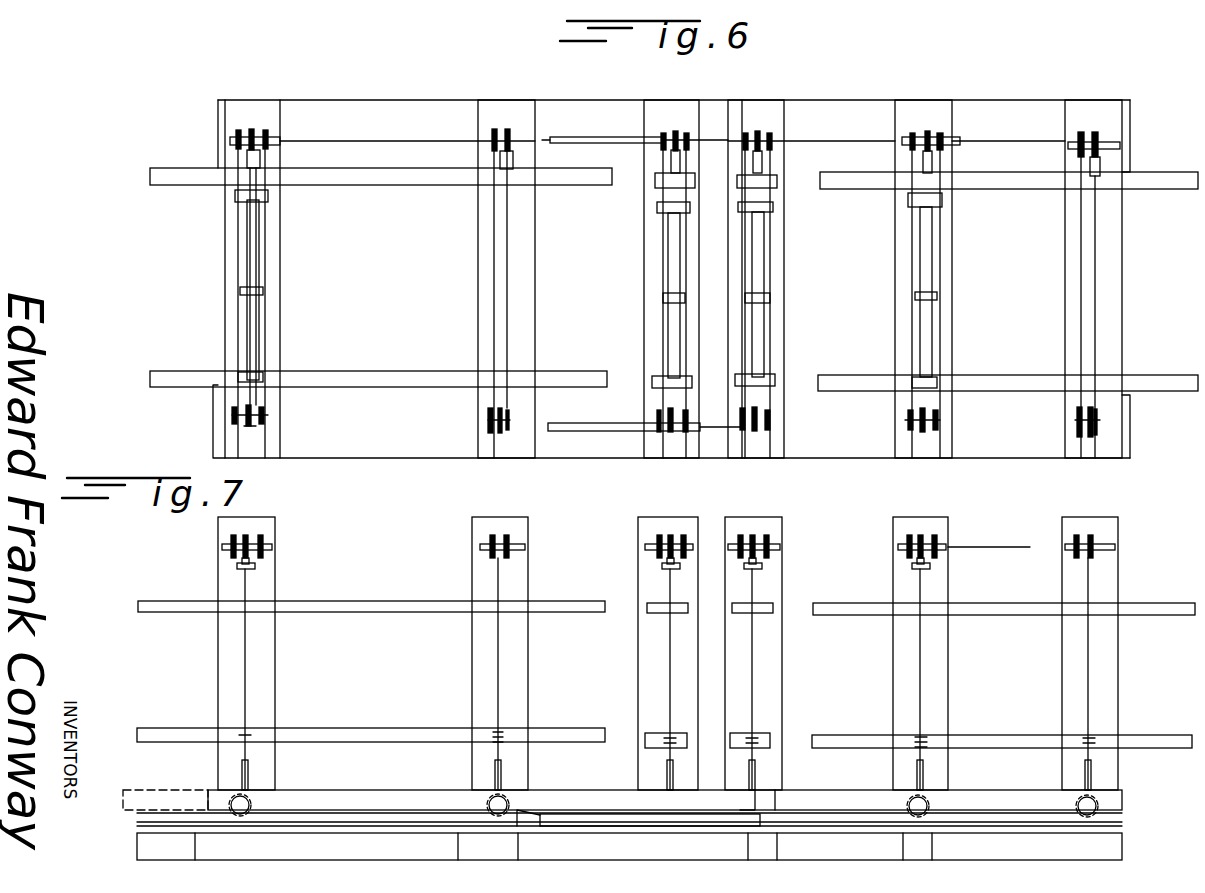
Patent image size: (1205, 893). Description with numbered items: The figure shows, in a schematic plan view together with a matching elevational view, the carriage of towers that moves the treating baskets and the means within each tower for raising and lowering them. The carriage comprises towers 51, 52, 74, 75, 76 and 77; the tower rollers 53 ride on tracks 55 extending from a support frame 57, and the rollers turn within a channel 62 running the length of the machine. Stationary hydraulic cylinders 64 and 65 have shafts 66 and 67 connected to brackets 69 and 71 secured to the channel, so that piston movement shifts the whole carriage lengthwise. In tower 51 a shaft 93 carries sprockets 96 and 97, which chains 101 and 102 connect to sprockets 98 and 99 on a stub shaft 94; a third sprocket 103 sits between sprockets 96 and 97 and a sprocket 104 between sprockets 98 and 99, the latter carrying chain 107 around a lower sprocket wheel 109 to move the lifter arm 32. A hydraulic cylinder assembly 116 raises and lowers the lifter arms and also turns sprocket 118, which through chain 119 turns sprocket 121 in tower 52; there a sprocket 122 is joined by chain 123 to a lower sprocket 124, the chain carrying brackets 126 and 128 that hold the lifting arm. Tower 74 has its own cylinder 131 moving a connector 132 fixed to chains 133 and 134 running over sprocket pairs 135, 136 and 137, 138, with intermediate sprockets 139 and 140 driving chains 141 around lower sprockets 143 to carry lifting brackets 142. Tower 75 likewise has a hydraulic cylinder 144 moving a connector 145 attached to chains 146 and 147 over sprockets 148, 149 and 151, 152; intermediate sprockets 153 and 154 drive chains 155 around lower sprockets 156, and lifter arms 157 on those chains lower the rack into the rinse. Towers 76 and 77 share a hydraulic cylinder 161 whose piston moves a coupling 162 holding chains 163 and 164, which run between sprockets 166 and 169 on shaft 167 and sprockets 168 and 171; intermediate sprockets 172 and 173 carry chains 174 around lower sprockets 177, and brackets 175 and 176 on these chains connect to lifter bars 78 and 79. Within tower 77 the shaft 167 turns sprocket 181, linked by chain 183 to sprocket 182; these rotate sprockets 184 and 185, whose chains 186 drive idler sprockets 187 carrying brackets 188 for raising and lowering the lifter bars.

In FIG. 6, the lifter arm 32 is at (345, 370).
In FIG. 7, the lifter arm 32 is at (368, 728).
In FIG. 6, the tower 51 is at (262, 95).
In FIG. 7, the tower 51 is at (269, 515).
In FIG. 6, the tower 52 is at (506, 95).
In FIG. 7, the tower 52 is at (515, 515).
In FIG. 7, the rollers 53 is at (255, 800).
In FIG. 7, the tracks 55 is at (130, 810).
In FIG. 7, the support frame 57 is at (370, 857).
In FIG. 7, the channel 62 is at (378, 781).
In FIG. 6, the hydraulic cylinder 64 is at (580, 138).
In FIG. 6, the hydraulic cylinder 65 is at (582, 422).
In FIG. 7, the hydraulic cylinder 65 is at (740, 827).
In FIG. 6, the shaft 66 is at (720, 135).
In FIG. 6, the shaft 67 is at (720, 430).
In FIG. 6, the bracket 69 is at (760, 128).
In FIG. 7, the bracket 71 is at (778, 804).
In FIG. 6, the tower 74 is at (669, 91).
In FIG. 7, the tower 74 is at (653, 509).
In FIG. 6, the tower 75 is at (779, 97).
In FIG. 7, the tower 75 is at (767, 515).
In FIG. 6, the tower 76 is at (932, 95).
In FIG. 7, the tower 76 is at (931, 513).
In FIG. 6, the tower 77 is at (1094, 95).
In FIG. 7, the tower 77 is at (1101, 513).
In FIG. 6, the lifter bar 78 is at (1140, 172).
In FIG. 6, the lifter bar 79 is at (1150, 374).
In FIG. 7, the lifter bar 79 is at (1012, 735).
In FIG. 6, the shaft 93 is at (345, 140).
In FIG. 6, the stub shaft 94 is at (250, 428).
In FIG. 6, the sprocket 96 is at (239, 128).
In FIG. 6, the sprocket 97 is at (266, 128).
In FIG. 6, the sprocket 98 is at (231, 416).
In FIG. 7, the sprocket 98 is at (231, 545).
In FIG. 6, the sprocket 99 is at (264, 416).
In FIG. 7, the sprocket 99 is at (263, 543).
In FIG. 6, the chain 101 is at (237, 250).
In FIG. 6, the chain 102 is at (265, 260).
In FIG. 6, the sprocket 103 is at (253, 127).
In FIG. 6, the sprocket 104 is at (246, 420).
In FIG. 7, the sprocket 104 is at (244, 534).
In FIG. 7, the chain 107 is at (245, 648).
In FIG. 7, the lower sprocket wheel 109 is at (241, 773).
In FIG. 6, the hydraulic cylinder assembly 116 is at (255, 315).
In FIG. 6, the sprocket 118 is at (494, 127).
In FIG. 7, the sprocket 118 is at (491, 536).
In FIG. 6, the chain 119 is at (494, 270).
In FIG. 6, the sprocket 121 is at (487, 420).
In FIG. 6, the sprocket 122 is at (509, 127).
In FIG. 7, the sprocket 122 is at (509, 543).
In FIG. 7, the chain 123 is at (500, 588).
In FIG. 7, the lower sprocket 124 is at (503, 775).
In FIG. 6, the bracket 126 is at (500, 405).
In FIG. 7, the bracket 126 is at (500, 735).
In FIG. 6, the bracket 128 is at (500, 163).
In FIG. 6, the cylinder 131 is at (668, 305).
In FIG. 6, the connector 132 is at (668, 222).
In FIG. 6, the chain 133 is at (658, 207).
In FIG. 6, the chain 134 is at (688, 205).
In FIG. 6, the sprocket 135 is at (662, 131).
In FIG. 6, the sprocket 136 is at (657, 416).
In FIG. 7, the sprocket 136 is at (657, 546).
In FIG. 6, the sprocket 137 is at (689, 131).
In FIG. 6, the sprocket 138 is at (685, 433).
In FIG. 7, the sprocket 138 is at (685, 536).
In FIG. 6, the sprocket 139 is at (675, 129).
In FIG. 6, the sprocket 140 is at (668, 428).
In FIG. 7, the chains 141 is at (670, 655).
In FIG. 6, the lifting bracket 142 is at (655, 181).
In FIG. 7, the lifting bracket 142 is at (648, 738).
In FIG. 7, the lower sprocket 143 is at (668, 773).
In FIG. 6, the hydraulic cylinder 144 is at (758, 305).
In FIG. 6, the connector 145 is at (773, 206).
In FIG. 6, the chain 146 is at (746, 250).
In FIG. 6, the chain 147 is at (770, 262).
In FIG. 6, the sprocket 148 is at (746, 131).
In FIG. 7, the sprocket 148 is at (672, 534).
In FIG. 6, the sprocket 149 is at (742, 431).
In FIG. 7, the sprocket 149 is at (740, 540).
In FIG. 6, the sprocket 151 is at (771, 131).
In FIG. 6, the sprocket 152 is at (768, 431).
In FIG. 7, the sprocket 152 is at (769, 545).
In FIG. 6, the intermediate sprocket 153 is at (758, 129).
In FIG. 6, the intermediate sprocket 154 is at (755, 432).
In FIG. 7, the intermediate sprocket 154 is at (755, 540).
In FIG. 7, the chains 155 is at (752, 650).
In FIG. 7, the sprocket 156 is at (756, 775).
In FIG. 6, the lifter arm 157 is at (765, 178).
In FIG. 7, the lifter arm 157 is at (755, 736).
In FIG. 6, the hydraulic cylinder 161 is at (920, 305).
In FIG. 6, the coupling 162 is at (908, 200).
In FIG. 6, the chain 163 is at (912, 238).
In FIG. 6, the chain 164 is at (940, 262).
In FIG. 6, the sprocket 166 is at (912, 131).
In FIG. 6, the shaft 167 is at (985, 140).
In FIG. 7, the shaft 167 is at (1005, 547).
In FIG. 6, the sprocket 168 is at (907, 420).
In FIG. 7, the sprocket 168 is at (907, 546).
In FIG. 6, the sprocket 169 is at (941, 131).
In FIG. 6, the sprocket 171 is at (938, 420).
In FIG. 7, the sprocket 171 is at (937, 545).
In FIG. 6, the intermediate sprocket 172 is at (927, 129).
In FIG. 6, the intermediate sprocket 173 is at (920, 428).
In FIG. 7, the intermediate sprocket 173 is at (922, 534).
In FIG. 7, the chains 174 is at (920, 645).
In FIG. 6, the bracket 175 is at (932, 164).
In FIG. 6, the bracket 176 is at (928, 395).
In FIG. 7, the bracket 176 is at (923, 742).
In FIG. 7, the lower sprocket 177 is at (923, 780).
In FIG. 6, the sprocket 181 is at (1077, 136).
In FIG. 6, the sprocket 182 is at (1076, 426).
In FIG. 7, the sprocket 182 is at (1076, 536).
In FIG. 6, the chain 183 is at (1082, 262).
In FIG. 6, the sprocket 184 is at (1096, 130).
In FIG. 6, the sprocket 185 is at (1098, 426).
In FIG. 7, the sprocket 185 is at (1093, 543).
In FIG. 7, the chains 186 is at (1088, 662).
In FIG. 7, the idler sprocket 187 is at (1092, 782).
In FIG. 7, the bracket 188 is at (1092, 742).